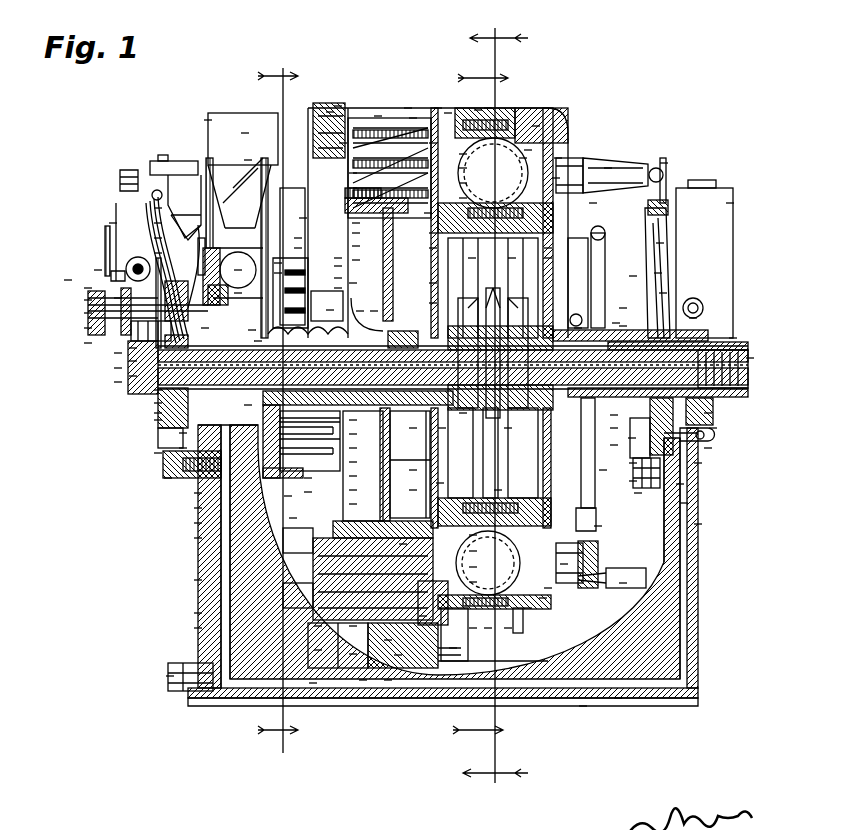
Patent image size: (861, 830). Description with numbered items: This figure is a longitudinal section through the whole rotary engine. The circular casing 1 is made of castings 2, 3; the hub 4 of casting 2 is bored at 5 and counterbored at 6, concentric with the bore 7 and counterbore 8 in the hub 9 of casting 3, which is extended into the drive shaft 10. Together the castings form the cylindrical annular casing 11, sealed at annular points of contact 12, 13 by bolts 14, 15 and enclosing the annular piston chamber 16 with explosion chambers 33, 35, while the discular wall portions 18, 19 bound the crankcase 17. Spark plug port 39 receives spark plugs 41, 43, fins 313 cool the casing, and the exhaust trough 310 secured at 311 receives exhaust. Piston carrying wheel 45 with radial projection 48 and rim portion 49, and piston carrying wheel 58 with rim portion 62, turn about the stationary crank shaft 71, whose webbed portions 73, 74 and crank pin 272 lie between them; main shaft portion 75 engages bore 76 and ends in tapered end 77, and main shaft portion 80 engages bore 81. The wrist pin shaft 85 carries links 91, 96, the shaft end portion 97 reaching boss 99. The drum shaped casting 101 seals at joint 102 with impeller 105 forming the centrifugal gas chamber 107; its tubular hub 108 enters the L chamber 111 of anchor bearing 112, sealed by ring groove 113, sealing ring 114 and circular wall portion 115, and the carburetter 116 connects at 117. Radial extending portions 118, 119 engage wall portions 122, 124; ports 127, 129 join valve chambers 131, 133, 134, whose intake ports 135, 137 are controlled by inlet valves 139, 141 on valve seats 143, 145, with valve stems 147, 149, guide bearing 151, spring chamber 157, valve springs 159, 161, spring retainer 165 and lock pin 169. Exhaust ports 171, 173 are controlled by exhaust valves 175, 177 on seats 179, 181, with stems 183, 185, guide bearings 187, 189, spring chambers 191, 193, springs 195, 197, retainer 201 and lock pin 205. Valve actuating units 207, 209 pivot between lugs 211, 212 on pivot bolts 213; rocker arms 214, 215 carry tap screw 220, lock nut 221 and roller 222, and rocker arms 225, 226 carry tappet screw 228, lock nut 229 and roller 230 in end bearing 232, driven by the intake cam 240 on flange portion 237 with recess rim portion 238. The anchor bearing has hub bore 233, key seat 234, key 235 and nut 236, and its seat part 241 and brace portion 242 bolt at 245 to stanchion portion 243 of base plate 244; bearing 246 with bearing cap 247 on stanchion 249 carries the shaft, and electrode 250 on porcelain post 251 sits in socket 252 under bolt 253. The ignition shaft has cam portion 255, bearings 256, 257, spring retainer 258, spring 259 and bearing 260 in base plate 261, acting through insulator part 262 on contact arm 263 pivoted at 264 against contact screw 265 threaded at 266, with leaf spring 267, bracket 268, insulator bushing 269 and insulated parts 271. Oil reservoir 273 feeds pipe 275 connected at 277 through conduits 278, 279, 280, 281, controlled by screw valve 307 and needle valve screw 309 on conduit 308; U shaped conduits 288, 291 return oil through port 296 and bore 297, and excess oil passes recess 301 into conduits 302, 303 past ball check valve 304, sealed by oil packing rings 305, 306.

The circular casing 1 is at (500, 620).
The casting 2 is at (480, 100).
The casting 3 is at (550, 150).
The hub 4 is at (410, 406).
The bore 5 is at (328, 406).
The counterbore 6 is at (431, 423).
The bore 7 is at (628, 437).
The counterbore 8 is at (606, 407).
The hub 9 is at (570, 320).
The drive shaft 10 is at (742, 350).
The cylindrical annular casing 11 is at (520, 600).
The annular point of contact 12 is at (490, 482).
The annular point of contact 13 is at (480, 620).
The bolts 14 is at (595, 480).
The bolts 15 is at (520, 618).
The annular piston chamber 16 is at (520, 142).
The crankcase 17 is at (432, 475).
The discular wall portion 18 is at (412, 469).
The discular wall portion 19 is at (606, 437).
The explosion chamber 33 is at (515, 150).
The explosion chamber 35 is at (540, 580).
The spark plug port 39 is at (565, 573).
The spark plug 41 is at (600, 160).
The spark plug 43 is at (615, 578).
The piston carrying wheel 45 is at (425, 240).
The radial projection 48 is at (406, 423).
The rim portion 49 is at (412, 489).
The piston carrying wheel 58 is at (540, 250).
The rim portion 62 is at (595, 462).
The crank shaft 71 is at (125, 368).
The webbed portion 73 is at (469, 407).
The webbed portion 74 is at (515, 423).
The main shaft portion 75 is at (125, 353).
The bore 76 is at (425, 295).
The tapered end 77 is at (110, 374).
The main shaft portion 80 is at (615, 318).
The bore 81 is at (608, 315).
The wrist pin shaft 85 is at (425, 275).
The link 91 is at (472, 251).
The link 96 is at (512, 251).
The shaft end portion 97 is at (548, 170).
The boss 99 is at (606, 420).
The drum shaped casting 101 is at (367, 461).
The sealed joint 102 is at (425, 225).
The impeller 105 is at (367, 447).
The centrifugal gas chamber 107 is at (348, 252).
The tubular hub 108 is at (367, 433).
The L chamber 111 is at (197, 320).
The anchor bearing 112 is at (175, 425).
The ring groove 113 is at (244, 328).
The sealing ring 114 is at (252, 333).
The circular wall portion 115 is at (250, 403).
The carburetter 116 is at (200, 112).
The connection 117 is at (270, 265).
The radial extending portion 118 is at (405, 110).
The radial extending portion 119 is at (367, 419).
The wall portion 122 is at (470, 102).
The wall portion 124 is at (465, 620).
The port 127 is at (455, 146).
The port 129 is at (491, 534).
The valve chamber 131 is at (455, 160).
The valve chamber 133 is at (491, 550).
The valve chamber 134 is at (348, 215).
The intake port 135 is at (348, 225).
The intake port 137 is at (367, 503).
The inlet valve 139 is at (455, 190).
The inlet valve 141 is at (491, 581).
The valve seat 143 is at (455, 175).
The valve seat 145 is at (491, 566).
The valve stem 147 is at (345, 180).
The valve stem 149 is at (415, 541).
The valve guide bearing 151 is at (420, 205).
The valve spring chamber 157 is at (367, 489).
The valve spring 159 is at (348, 238).
The valve spring 161 is at (367, 475).
The spring retainer 165 is at (323, 493).
The lock pin 169 is at (323, 507).
The exhaust port 171 is at (400, 100).
The exhaust port 173 is at (367, 633).
The exhaust valve 175 is at (440, 105).
The exhaust valve 177 is at (445, 640).
The valve seat 179 is at (430, 100).
The valve seat 181 is at (414, 652).
The valve stem 183 is at (335, 135).
The valve stem 185 is at (415, 608).
The valve guide bearing 187 is at (425, 135).
The valve guide bearing 189 is at (403, 637).
The valve spring chamber 191 is at (370, 108).
The valve spring chamber 193 is at (367, 649).
The valve spring 195 is at (345, 165).
The valve spring 197 is at (333, 648).
The valve spring retainer 201 is at (333, 633).
The lock pin 205 is at (305, 675).
The valve actuating unit 207 is at (345, 275).
The valve actuating unit 209 is at (290, 488).
The lug 211 is at (327, 307).
The lug 212 is at (322, 104).
The pivot bolt 213 is at (330, 98).
The rocker arm 214 is at (330, 280).
The rocker arm 215 is at (190, 620).
The tap screw 220 is at (190, 588).
The lock nut 221 is at (190, 605).
The roller 222 is at (330, 270).
The rocker arm 225 is at (335, 480).
The rocker arm 226 is at (290, 512).
The tappet screw 228 is at (190, 545).
The lock nut 229 is at (160, 560).
The roller 230 is at (335, 465).
The end bearing 232 is at (150, 395).
The hub bore 233 is at (150, 382).
The key seat 234 is at (80, 305).
The key 235 is at (125, 340).
The nut 236 is at (110, 360).
The flange portion 237 is at (190, 515).
The recess rim portion 238 is at (297, 243).
The intake cam 240 is at (190, 500).
The seat part 241 is at (175, 440).
The brace portion 242 is at (190, 485).
The stanchion portion 243 is at (190, 530).
The base plate 244 is at (575, 698).
The bolts 245 is at (160, 470).
The bearing 246 is at (700, 405).
The bearing cap 247 is at (725, 330).
The stanchion 249 is at (690, 516).
The electrode 250 is at (656, 155).
The porcelain post 251 is at (652, 235).
The socket 252 is at (650, 265).
The bolt 253 is at (655, 285).
The cam portion 255 is at (297, 229).
The bearing 256 is at (257, 265).
The bearing 257 is at (270, 255).
The spring retainer 258 is at (150, 200).
The spring 259 is at (150, 215).
The bearing 260 is at (150, 230).
The base plate 261 is at (150, 245).
The insulator part 262 is at (80, 320).
The contact arm 263 is at (90, 262).
The pivot 264 is at (102, 240).
The contact screw 265 is at (80, 335).
The threaded portion 266 is at (110, 345).
The leaf spring 267 is at (108, 290).
The bracket 268 is at (80, 292).
The insulator bushing 269 is at (60, 272).
The insulated parts 271 is at (80, 280).
The crank pin 272 is at (255, 289).
The oil reservoir 273 is at (722, 195).
The pipe 275 is at (705, 420).
The connection 277 is at (700, 440).
The conduit 278 is at (676, 495).
The conduit 279 is at (610, 690).
The conduit 280 is at (190, 572).
The conduit 281 is at (150, 405).
The U shaped conduit 288 is at (585, 195).
The U shaped conduit 291 is at (590, 518).
The port 296 is at (615, 300).
The bore 297 is at (620, 462).
The recess 301 is at (690, 455).
The conduit 302 is at (620, 480).
The conduit 303 is at (672, 476).
The ball check valve 304 is at (630, 485).
The oil packing ring 305 is at (625, 268).
The oil packing ring 306 is at (685, 310).
The screw valve 307 is at (160, 668).
The conduit 308 is at (150, 445).
The needle valve screw 309 is at (150, 412).
The exhaust trough 310 is at (380, 672).
The securing point 311 is at (355, 672).
The fins 313 is at (535, 590).